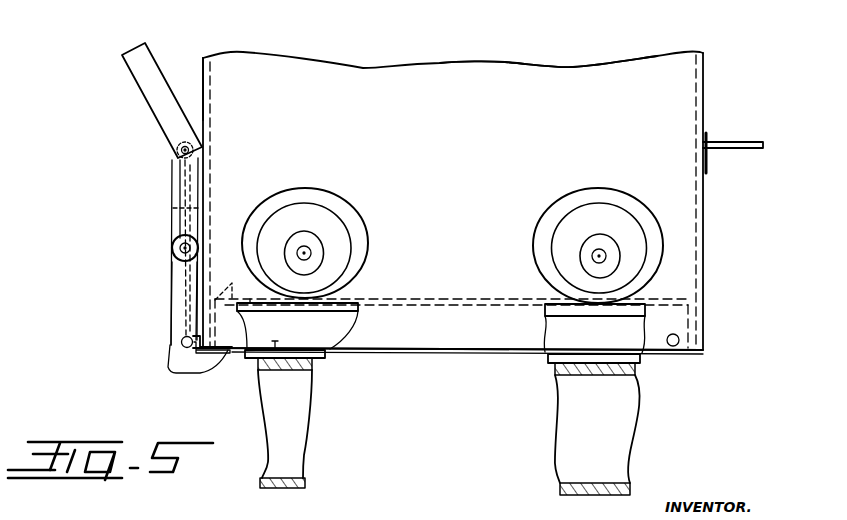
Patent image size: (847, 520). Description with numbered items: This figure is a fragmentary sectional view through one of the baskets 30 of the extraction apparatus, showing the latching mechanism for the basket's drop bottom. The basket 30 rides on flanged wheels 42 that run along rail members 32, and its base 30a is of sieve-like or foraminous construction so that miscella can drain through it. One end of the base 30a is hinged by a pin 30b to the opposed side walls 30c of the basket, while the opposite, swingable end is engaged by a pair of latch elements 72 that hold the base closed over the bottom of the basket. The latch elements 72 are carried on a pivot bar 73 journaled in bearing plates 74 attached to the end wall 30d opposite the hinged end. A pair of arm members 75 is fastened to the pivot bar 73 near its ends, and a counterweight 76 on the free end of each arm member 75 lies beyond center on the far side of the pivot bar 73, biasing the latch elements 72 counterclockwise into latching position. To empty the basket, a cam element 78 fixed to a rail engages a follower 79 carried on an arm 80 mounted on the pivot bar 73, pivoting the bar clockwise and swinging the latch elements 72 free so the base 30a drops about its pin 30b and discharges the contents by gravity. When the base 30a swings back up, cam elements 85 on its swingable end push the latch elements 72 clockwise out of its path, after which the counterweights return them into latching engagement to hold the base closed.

The basket 30 is at (456, 54).
The base 30a is at (462, 352).
The pin 30b is at (673, 347).
The side walls 30c is at (573, 78).
The end wall 30d is at (203, 73).
The rail members 32 is at (358, 326).
The flanged wheel 42 is at (346, 200).
The latch elements 72 is at (191, 374).
The pivot bar 73 is at (182, 250).
The bearing plates 74 is at (742, 141).
The arm members 75 is at (178, 178).
The counterweight 76 is at (158, 102).
The cam element 78 is at (279, 342).
The follower 79 is at (181, 342).
The arm 80 is at (180, 305).
The cam elements 85 is at (223, 284).